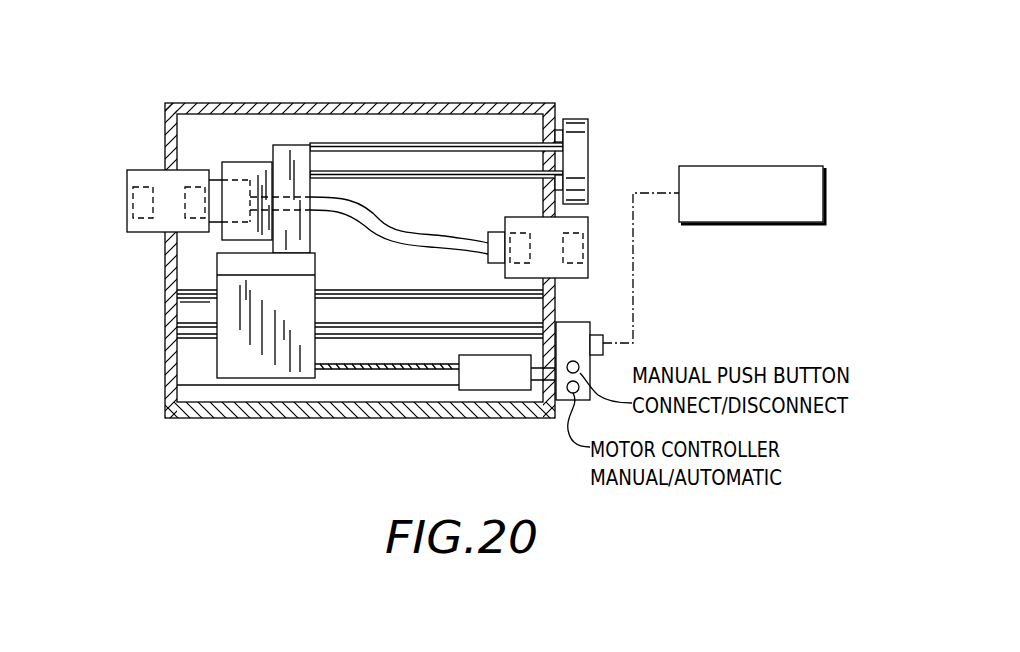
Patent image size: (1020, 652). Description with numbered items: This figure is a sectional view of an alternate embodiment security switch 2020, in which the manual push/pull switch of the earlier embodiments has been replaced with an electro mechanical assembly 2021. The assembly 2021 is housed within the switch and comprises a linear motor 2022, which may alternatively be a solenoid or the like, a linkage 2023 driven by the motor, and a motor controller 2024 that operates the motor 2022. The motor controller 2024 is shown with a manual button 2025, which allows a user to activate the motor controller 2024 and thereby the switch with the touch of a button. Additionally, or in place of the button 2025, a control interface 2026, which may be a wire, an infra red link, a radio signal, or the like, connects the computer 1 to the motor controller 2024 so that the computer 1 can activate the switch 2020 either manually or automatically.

The security switch 2020 is at (225, 72).
The electro mechanical assembly 2021 is at (482, 418).
The linear motor 2022 is at (473, 391).
The linkage 2023 is at (360, 370).
The motor controller 2024 is at (573, 330).
The manual button 2025 is at (598, 330).
The control interface 2026 is at (657, 190).
The computer 1 is at (792, 166).